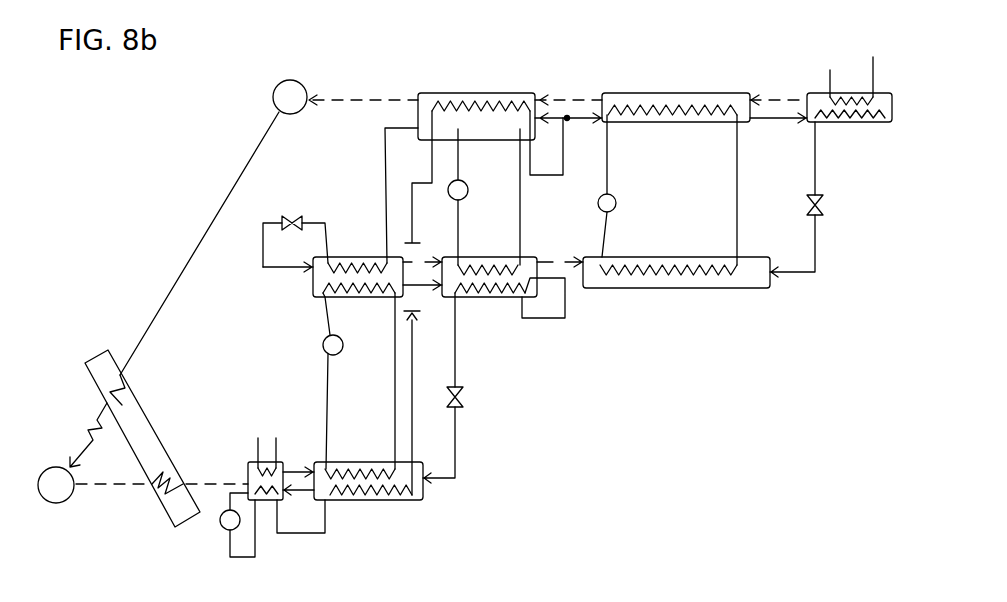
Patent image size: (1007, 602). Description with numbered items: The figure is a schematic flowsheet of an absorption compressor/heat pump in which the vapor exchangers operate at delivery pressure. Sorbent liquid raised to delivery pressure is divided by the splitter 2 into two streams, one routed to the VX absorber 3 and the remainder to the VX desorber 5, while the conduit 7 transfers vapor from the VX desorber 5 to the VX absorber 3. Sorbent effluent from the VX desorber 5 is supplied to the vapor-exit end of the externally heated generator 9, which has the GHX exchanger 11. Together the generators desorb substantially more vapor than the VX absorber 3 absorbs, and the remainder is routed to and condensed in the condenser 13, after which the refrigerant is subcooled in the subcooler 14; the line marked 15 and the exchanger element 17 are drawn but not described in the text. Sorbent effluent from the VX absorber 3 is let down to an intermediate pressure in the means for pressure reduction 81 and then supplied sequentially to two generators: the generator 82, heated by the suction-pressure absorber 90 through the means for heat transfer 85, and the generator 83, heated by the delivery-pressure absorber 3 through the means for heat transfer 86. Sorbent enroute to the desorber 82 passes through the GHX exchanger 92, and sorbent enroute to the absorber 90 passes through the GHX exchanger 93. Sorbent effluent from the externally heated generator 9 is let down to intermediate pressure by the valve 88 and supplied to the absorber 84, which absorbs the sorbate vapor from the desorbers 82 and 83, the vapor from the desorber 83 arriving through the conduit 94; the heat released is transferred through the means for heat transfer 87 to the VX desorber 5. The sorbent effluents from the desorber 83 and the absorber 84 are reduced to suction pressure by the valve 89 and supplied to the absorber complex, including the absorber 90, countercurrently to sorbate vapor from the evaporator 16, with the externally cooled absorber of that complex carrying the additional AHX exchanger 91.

The splitter 2 is at (567, 118).
The VX absorber 3 is at (430, 93).
The VX desorber 5 is at (648, 100).
The conduit 7 is at (565, 100).
The externally heated generator 9 is at (868, 125).
The GHX exchanger 11 is at (855, 125).
The condenser 13 is at (274, 96).
The subcooler 14 is at (132, 392).
The flow line 15 is at (88, 418).
The evaporator 16 is at (70, 500).
The coil 17 is at (829, 72).
The means for pressure reduction 81 is at (304, 215).
The generator 82 is at (313, 288).
The generator 83 is at (469, 256).
The absorber 84 is at (700, 290).
The means for heat transfer 85 is at (336, 354).
The means for heat transfer 86 is at (476, 160).
The means for heat transfer 87 is at (616, 200).
The valve 88 is at (834, 203).
The valve 89 is at (468, 392).
The absorber 90 is at (408, 505).
The AHX exchanger 91 is at (347, 505).
The GHX exchanger 92 is at (470, 100).
The GHX exchanger 93 is at (466, 296).
The conduit 94 is at (546, 258).